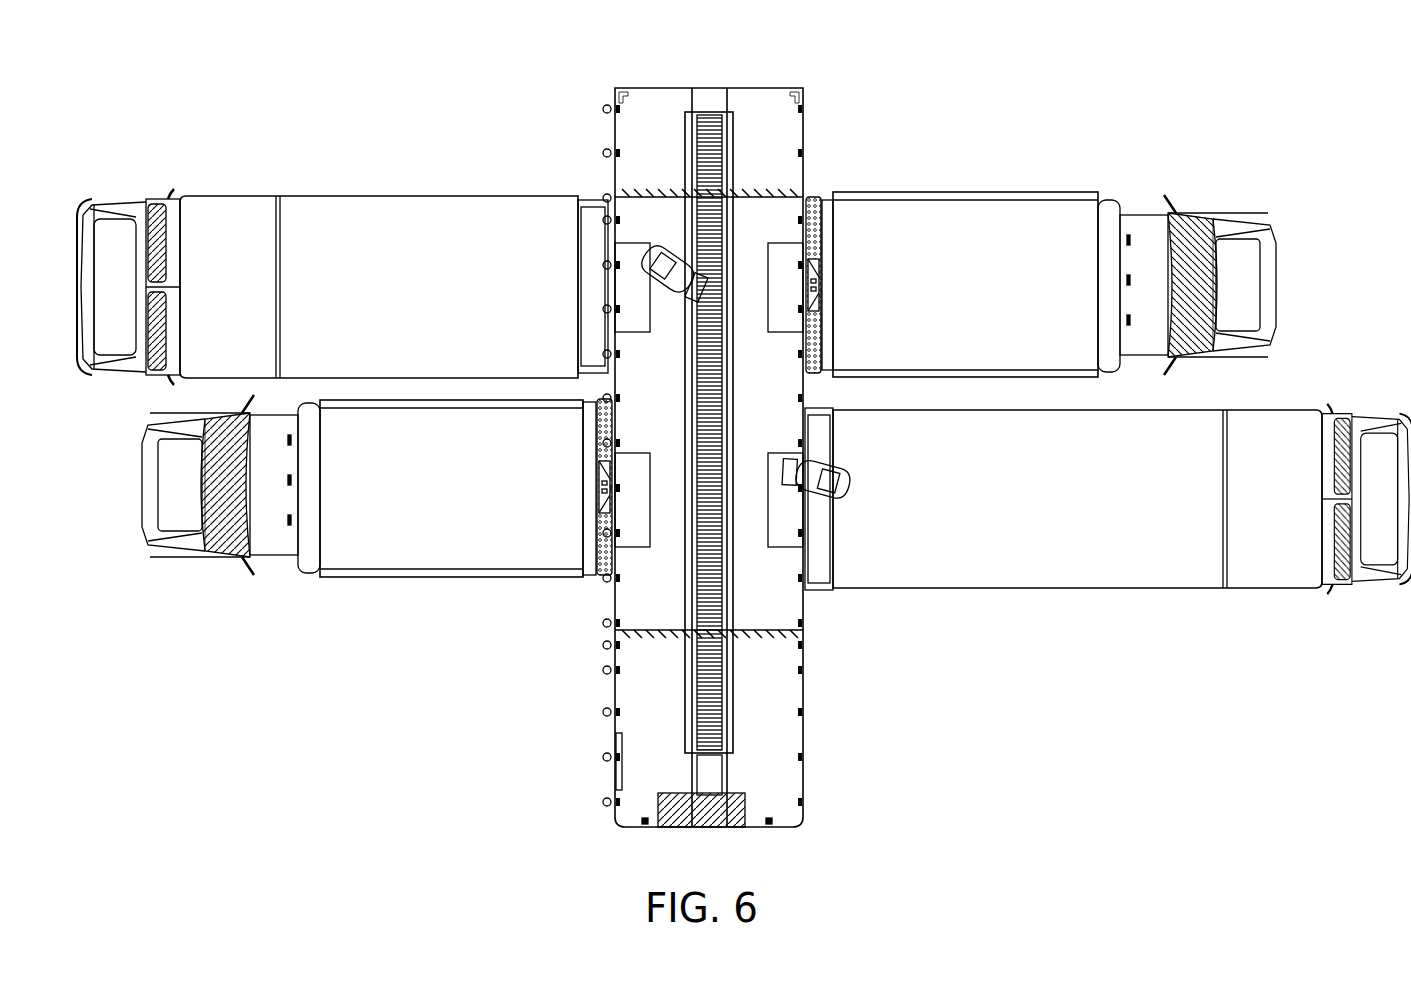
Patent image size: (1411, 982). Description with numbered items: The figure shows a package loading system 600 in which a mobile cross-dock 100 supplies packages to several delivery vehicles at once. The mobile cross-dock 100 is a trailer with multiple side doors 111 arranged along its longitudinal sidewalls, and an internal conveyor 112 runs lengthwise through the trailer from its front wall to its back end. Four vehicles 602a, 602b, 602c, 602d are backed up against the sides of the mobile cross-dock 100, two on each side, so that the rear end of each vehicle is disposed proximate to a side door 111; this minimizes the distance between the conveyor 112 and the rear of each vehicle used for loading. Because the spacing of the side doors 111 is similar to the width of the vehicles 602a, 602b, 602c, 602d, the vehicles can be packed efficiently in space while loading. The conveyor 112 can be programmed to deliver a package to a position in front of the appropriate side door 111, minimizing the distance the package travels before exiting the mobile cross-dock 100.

The package loading system 600 is at (180, 57).
The mobile cross-dock 100 is at (714, 68).
The side doors 111 is at (800, 548).
The conveyor 112 is at (686, 703).
The vehicle 602a is at (400, 196).
The vehicle 602b is at (950, 194).
The vehicle 602c is at (340, 578).
The vehicle 602d is at (915, 590).